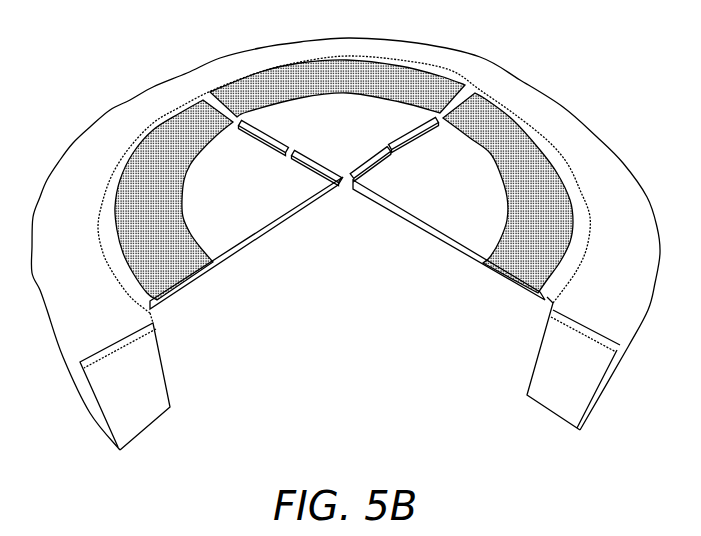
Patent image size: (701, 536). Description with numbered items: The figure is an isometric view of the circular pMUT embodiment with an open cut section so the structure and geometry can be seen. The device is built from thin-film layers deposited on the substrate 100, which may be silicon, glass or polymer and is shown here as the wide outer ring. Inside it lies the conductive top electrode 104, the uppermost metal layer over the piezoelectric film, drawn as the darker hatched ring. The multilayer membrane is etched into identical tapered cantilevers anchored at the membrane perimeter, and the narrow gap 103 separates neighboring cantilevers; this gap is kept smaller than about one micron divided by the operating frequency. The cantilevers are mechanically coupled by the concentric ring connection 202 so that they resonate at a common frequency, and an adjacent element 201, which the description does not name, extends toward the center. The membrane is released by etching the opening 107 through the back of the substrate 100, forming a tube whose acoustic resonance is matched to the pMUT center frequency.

The substrate 100 is at (162, 396).
The top electrode 104 is at (366, 78).
The gap 103 is at (320, 166).
The concentric ring connection 202 is at (287, 155).
The right plate 201 is at (436, 219).
The opening 107 is at (348, 300).